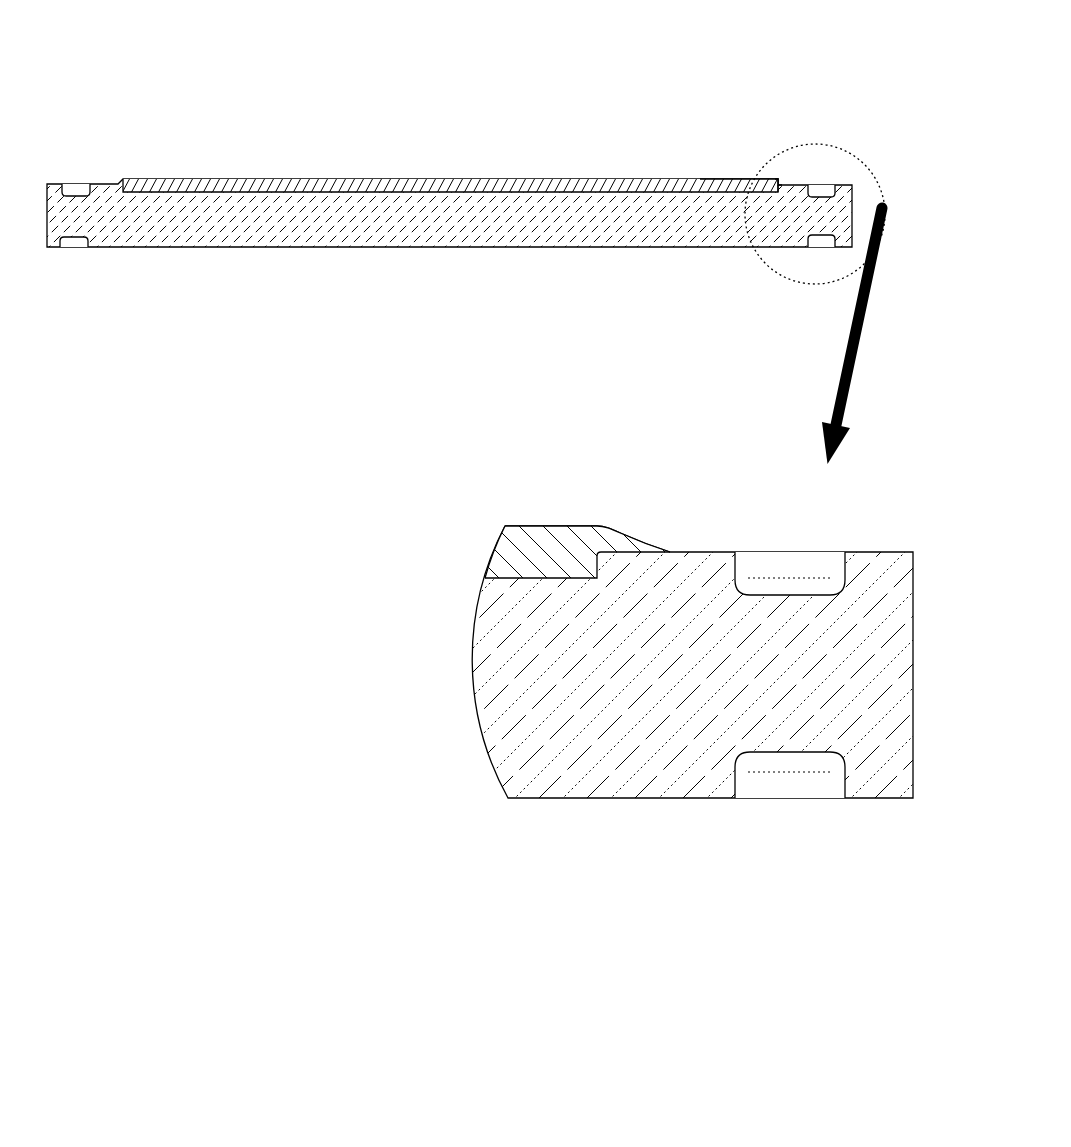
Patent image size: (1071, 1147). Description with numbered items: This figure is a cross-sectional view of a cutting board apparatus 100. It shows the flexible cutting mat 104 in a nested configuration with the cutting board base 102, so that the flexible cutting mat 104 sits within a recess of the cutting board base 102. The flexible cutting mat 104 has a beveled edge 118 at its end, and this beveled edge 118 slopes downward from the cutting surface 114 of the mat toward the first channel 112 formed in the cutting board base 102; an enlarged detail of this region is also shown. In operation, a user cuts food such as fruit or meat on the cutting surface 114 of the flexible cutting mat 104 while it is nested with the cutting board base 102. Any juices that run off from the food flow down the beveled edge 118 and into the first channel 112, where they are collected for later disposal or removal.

The cutting board apparatus 100 is at (216, 36).
The cutting board base 102 is at (350, 218).
The flexible cutting mat 104 is at (482, 187).
The cutting surface 114 is at (743, 180).
The beveled edge 118 is at (783, 182).
The first channel 112 is at (825, 183).